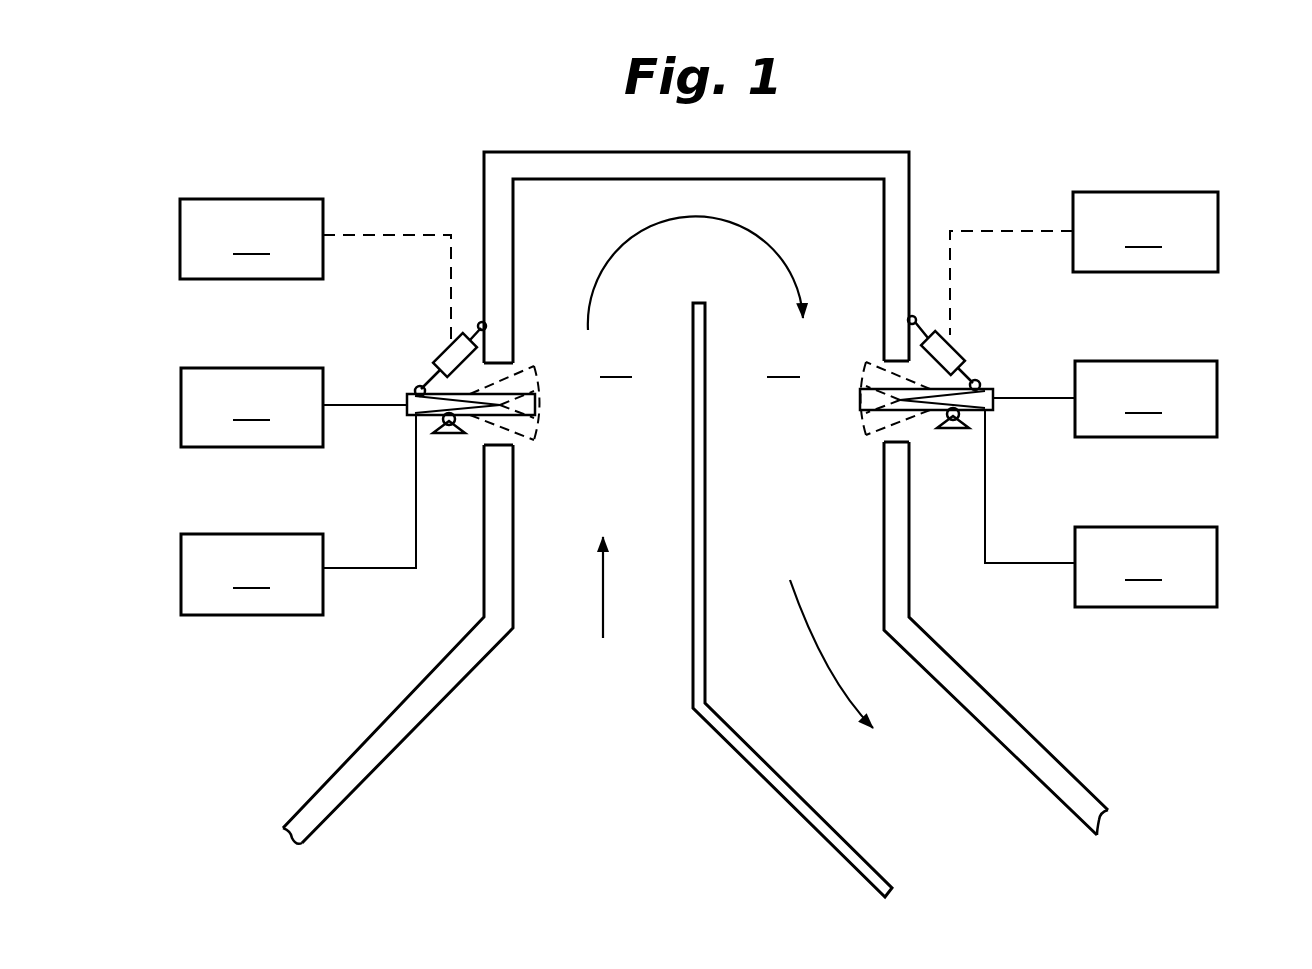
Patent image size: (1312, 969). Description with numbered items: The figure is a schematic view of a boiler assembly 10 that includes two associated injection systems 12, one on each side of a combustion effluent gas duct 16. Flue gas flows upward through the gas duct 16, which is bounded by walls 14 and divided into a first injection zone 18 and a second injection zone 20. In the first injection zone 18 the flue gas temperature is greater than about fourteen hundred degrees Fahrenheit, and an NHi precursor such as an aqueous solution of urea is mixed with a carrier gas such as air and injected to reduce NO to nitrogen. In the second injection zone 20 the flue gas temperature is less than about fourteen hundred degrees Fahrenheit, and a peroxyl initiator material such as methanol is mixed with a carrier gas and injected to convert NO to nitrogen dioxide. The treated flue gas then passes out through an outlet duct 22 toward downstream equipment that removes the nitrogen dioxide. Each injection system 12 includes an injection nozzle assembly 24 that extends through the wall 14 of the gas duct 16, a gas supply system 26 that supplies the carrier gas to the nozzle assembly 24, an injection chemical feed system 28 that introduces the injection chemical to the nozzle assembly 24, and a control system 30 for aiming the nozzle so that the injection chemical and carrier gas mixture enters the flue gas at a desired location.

The boiler assembly 10 is at (484, 138).
The injection system 12 is at (711, 406).
The wall 14 is at (480, 195).
The combustion effluent gas duct 16 is at (568, 486).
The first injection zone 18 is at (611, 384).
The second injection zone 20 is at (776, 384).
The outlet duct 22 is at (960, 741).
The injection nozzle assembly 24 is at (414, 356).
The gas supply system 26 is at (699, 512).
The injection chemical feed system 28 is at (699, 404).
The control system 30 is at (699, 266).